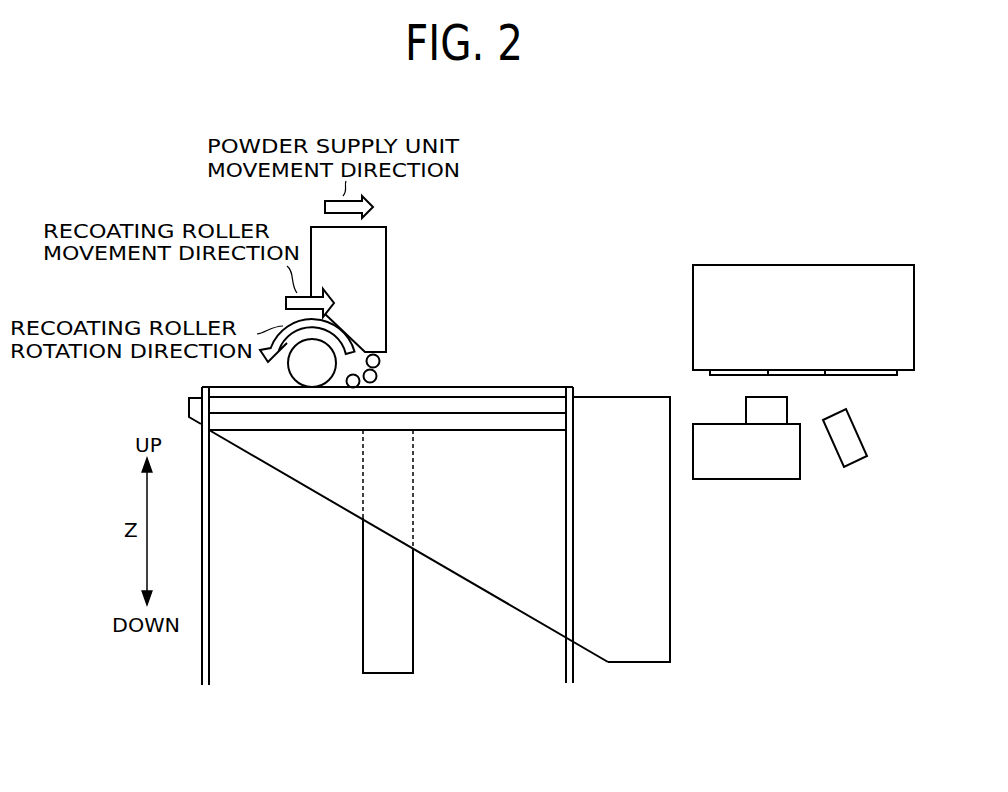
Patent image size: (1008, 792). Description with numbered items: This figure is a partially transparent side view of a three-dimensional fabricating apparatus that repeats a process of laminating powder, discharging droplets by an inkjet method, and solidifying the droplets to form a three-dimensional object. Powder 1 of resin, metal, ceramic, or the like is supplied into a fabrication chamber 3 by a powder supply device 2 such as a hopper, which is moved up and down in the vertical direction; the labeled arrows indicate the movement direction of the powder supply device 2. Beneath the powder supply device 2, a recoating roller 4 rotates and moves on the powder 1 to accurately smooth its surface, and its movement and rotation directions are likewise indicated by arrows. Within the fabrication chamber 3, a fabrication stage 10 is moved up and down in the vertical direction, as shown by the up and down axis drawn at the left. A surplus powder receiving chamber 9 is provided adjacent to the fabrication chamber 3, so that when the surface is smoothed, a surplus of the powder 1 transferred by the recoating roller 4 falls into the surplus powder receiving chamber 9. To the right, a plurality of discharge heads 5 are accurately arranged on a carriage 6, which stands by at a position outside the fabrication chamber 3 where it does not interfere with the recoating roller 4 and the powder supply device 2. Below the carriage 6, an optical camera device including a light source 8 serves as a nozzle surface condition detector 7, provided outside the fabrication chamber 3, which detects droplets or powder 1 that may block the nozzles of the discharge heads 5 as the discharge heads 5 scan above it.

The powder 1 is at (387, 380).
The powder supply device 2 is at (386, 267).
The fabrication chamber 3 is at (201, 663).
The recoating roller 4 is at (289, 387).
The discharge heads 5 is at (855, 375).
The carriage 6 is at (825, 265).
The nozzle surface condition detector 7 is at (745, 480).
The light source 8 is at (866, 440).
The surplus powder receiving chamber 9 is at (512, 610).
The fabrication stage 10 is at (316, 431).